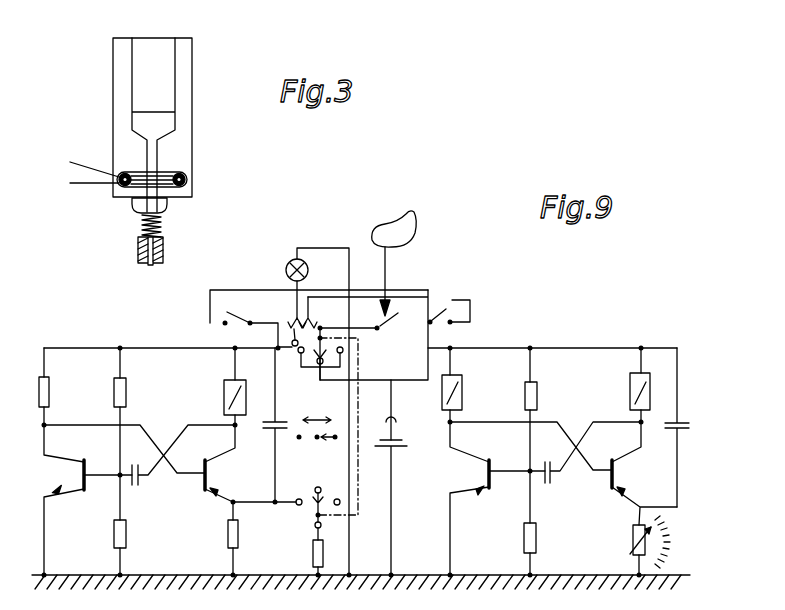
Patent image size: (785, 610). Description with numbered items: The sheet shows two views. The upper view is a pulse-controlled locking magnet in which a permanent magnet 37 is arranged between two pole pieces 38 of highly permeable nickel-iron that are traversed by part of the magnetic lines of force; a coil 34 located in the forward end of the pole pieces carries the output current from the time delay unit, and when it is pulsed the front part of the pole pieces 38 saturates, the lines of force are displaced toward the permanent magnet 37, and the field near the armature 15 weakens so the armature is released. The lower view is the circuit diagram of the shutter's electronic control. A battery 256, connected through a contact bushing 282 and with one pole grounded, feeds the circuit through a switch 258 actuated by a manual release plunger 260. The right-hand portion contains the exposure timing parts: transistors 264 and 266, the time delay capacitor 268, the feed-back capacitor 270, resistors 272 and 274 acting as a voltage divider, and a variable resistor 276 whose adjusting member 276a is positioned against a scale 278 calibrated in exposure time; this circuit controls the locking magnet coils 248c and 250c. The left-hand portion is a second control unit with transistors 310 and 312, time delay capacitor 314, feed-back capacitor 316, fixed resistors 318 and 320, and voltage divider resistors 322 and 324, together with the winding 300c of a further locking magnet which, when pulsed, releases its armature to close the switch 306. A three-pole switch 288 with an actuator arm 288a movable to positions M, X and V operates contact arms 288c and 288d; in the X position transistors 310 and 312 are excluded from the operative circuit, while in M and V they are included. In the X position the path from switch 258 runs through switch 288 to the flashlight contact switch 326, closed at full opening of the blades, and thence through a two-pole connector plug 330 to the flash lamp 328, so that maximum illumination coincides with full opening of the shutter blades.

In FIG. 3, the permanent magnet 37 is at (167, 60).
In FIG. 3, the pole pieces 38 is at (175, 150).
In FIG. 3, the coil 34 is at (184, 183).
In FIG. 3, the armature 15 is at (134, 207).
In FIG. 9, the switch contact 306 is at (220, 322).
In FIG. 9, the flash lamp 328 is at (286, 270).
In FIG. 9, the two-pole connector plug 330 is at (290, 318).
In FIG. 9, the switch 258 is at (395, 315).
In FIG. 9, the manual release plunger 260 is at (390, 274).
In FIG. 9, the flashlight contact switch 326 is at (457, 301).
In FIG. 9, the three-pole switch assembly 288 is at (358, 402).
In FIG. 9, the contact arm 288c is at (316, 356).
In FIG. 9, the switch actuator arm 288a is at (337, 437).
In FIG. 9, the contact arm 288d is at (316, 504).
In FIG. 9, the fixed resistor 320 is at (313, 556).
In FIG. 9, the contact bushing 282 is at (396, 414).
In FIG. 9, the battery 256 is at (404, 442).
In FIG. 9, the transistor 312 is at (79, 475).
In FIG. 9, the voltage divider resistor 322 is at (126, 394).
In FIG. 9, the voltage divider resistor 324 is at (126, 535).
In FIG. 9, the feed-back capacitor 316 is at (140, 487).
In FIG. 9, the winding 300c is at (228, 404).
In FIG. 9, the transistor 310 is at (212, 474).
In FIG. 9, the fixed resistor 318 is at (240, 531).
In FIG. 9, the time delay capacitor 314 is at (272, 431).
In FIG. 9, the coil 250c is at (462, 395).
In FIG. 9, the transistor 266 is at (484, 470).
In FIG. 9, the resistor 272 is at (538, 393).
In FIG. 9, the resistor 274 is at (524, 538).
In FIG. 9, the feed-back capacitor 270 is at (551, 484).
In FIG. 9, the coil 248c is at (633, 397).
In FIG. 9, the transistor 264 is at (616, 477).
In FIG. 9, the time delay capacitor 268 is at (666, 430).
In FIG. 9, the variable resistor 276 is at (631, 552).
In FIG. 9, the adjusting member 276a is at (640, 523).
In FIG. 9, the scale 278 is at (668, 540).